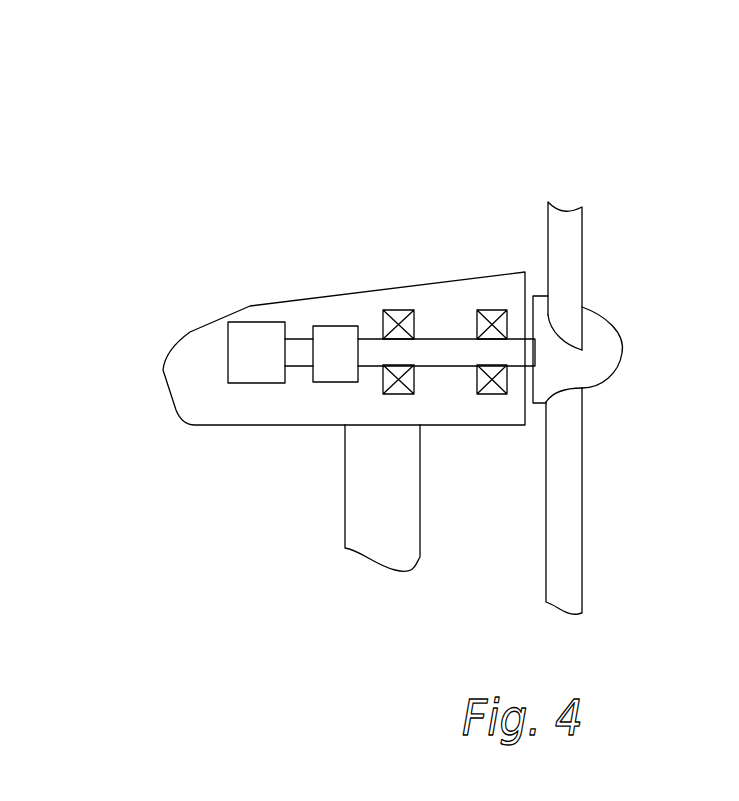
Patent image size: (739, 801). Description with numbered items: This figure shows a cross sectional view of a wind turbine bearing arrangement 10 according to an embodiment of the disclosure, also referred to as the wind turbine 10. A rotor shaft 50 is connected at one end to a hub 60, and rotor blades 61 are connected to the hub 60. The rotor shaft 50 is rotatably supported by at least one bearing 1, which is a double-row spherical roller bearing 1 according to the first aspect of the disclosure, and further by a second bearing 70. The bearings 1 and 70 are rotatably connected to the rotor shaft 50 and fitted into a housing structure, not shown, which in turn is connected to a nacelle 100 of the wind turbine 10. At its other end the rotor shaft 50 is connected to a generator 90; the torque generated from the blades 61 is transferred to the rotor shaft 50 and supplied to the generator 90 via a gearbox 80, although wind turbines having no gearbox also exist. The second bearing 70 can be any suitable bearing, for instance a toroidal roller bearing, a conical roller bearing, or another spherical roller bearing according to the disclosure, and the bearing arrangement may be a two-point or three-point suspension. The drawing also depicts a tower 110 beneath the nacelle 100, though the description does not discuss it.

The wind turbine bearing arrangement 10 is at (556, 115).
The nacelle 100 is at (162, 369).
The generator 90 is at (245, 345).
The gearbox 80 is at (325, 369).
The rotor shaft 50 is at (435, 338).
The second bearing 70 is at (402, 394).
The bearing 1 is at (492, 394).
The hub 60 is at (603, 362).
The rotor blades 61 is at (568, 508).
The tower 110 is at (393, 547).